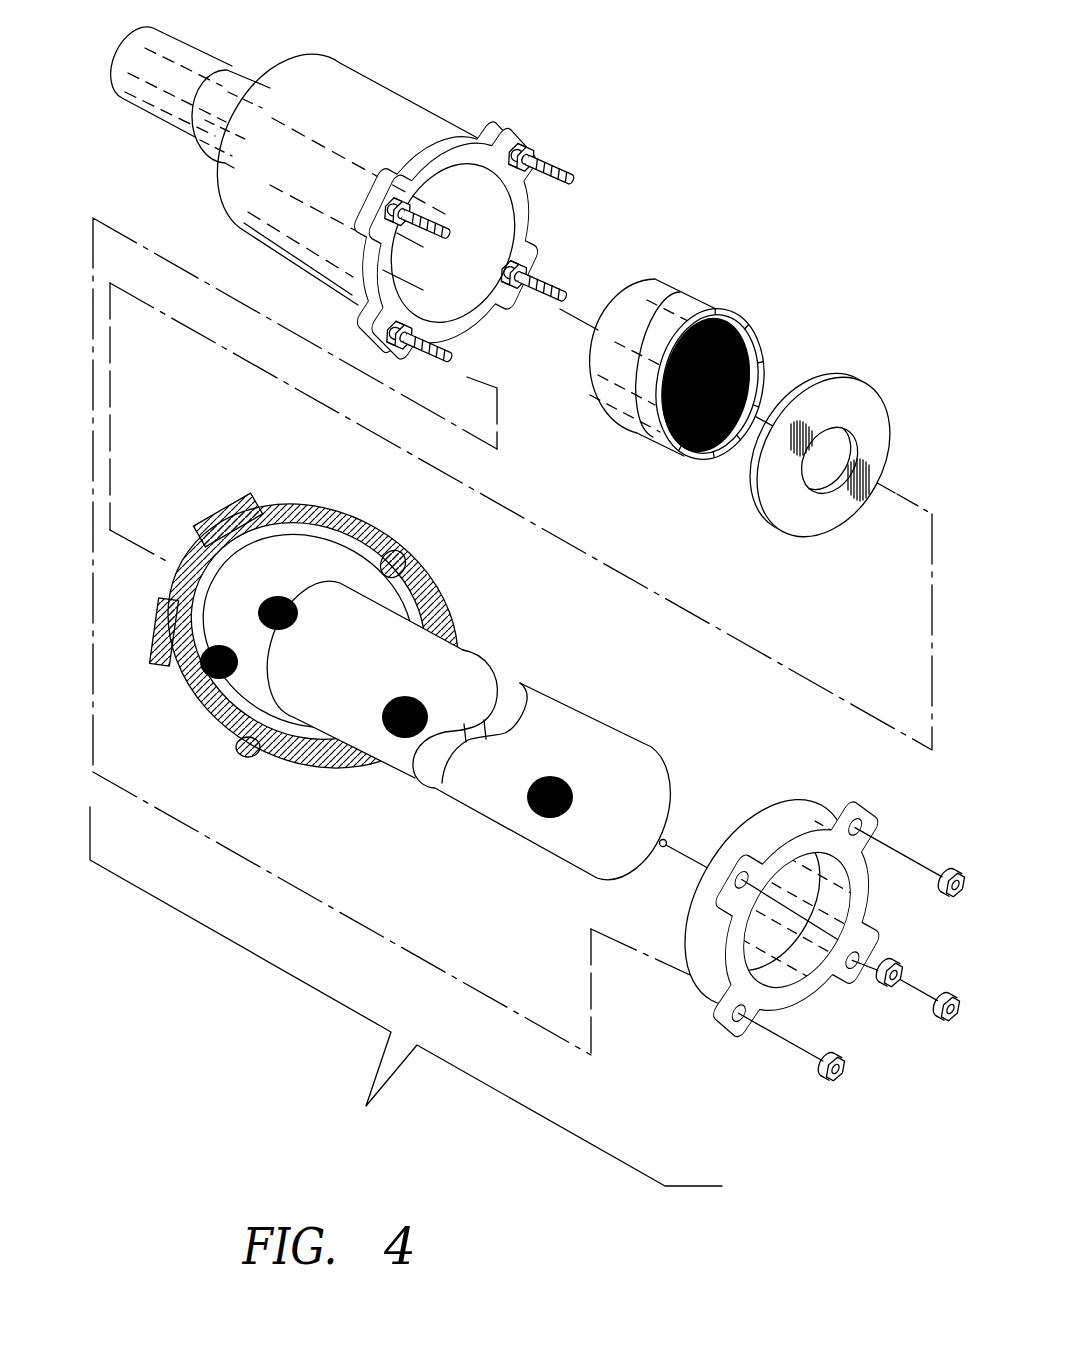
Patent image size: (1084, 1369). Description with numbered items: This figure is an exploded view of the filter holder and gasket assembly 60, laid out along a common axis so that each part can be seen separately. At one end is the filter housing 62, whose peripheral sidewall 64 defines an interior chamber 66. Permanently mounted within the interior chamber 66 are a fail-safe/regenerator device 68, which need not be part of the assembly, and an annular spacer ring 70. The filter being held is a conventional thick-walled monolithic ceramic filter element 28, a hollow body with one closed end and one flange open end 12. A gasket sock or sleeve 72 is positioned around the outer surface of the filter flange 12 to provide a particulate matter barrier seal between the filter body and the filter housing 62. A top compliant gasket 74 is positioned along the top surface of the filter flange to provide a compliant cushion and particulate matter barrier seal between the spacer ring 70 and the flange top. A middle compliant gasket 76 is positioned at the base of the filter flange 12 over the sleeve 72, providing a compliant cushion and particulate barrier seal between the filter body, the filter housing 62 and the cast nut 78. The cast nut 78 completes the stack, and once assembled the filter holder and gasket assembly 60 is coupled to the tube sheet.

The flange open end 12 is at (235, 595).
The monolithic ceramic filter element 28 is at (468, 818).
The filter holder and gasket assembly 60 is at (511, 702).
The filter housing 62 is at (378, 147).
The peripheral sidewall 64 is at (386, 94).
The interior chamber 66 is at (470, 193).
The fail-safe/regenerator device 68 is at (719, 316).
The annular spacer ring 70 is at (868, 411).
The gasket sock or sleeve 72 is at (365, 546).
The top compliant gasket 74 is at (231, 509).
The middle compliant gasket 76 is at (405, 566).
The cast nut 78 is at (730, 1033).